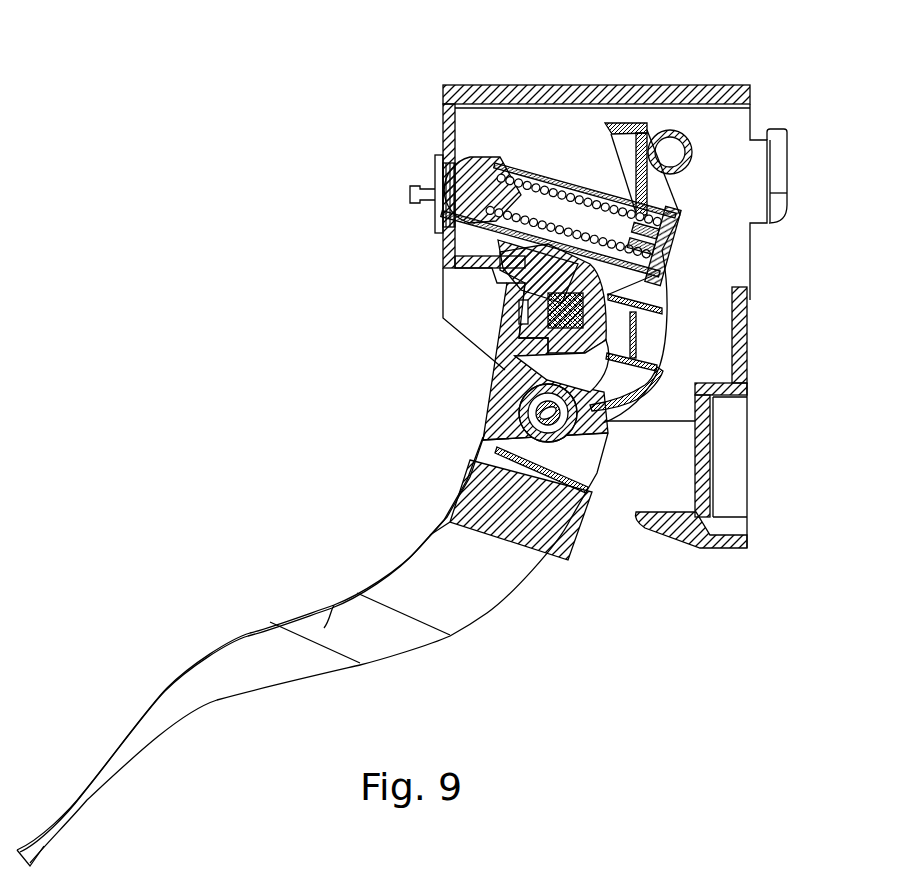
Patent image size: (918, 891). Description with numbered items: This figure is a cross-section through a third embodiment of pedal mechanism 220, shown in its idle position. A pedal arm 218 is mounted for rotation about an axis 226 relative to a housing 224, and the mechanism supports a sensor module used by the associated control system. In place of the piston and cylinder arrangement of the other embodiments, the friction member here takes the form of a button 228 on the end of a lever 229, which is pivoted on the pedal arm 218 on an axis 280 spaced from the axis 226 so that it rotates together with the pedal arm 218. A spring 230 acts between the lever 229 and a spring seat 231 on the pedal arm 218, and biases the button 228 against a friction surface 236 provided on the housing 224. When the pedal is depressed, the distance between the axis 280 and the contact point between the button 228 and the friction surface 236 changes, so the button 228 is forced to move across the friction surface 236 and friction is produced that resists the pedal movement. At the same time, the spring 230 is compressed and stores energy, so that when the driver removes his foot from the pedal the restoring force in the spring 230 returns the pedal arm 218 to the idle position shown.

The pedal arm 218 is at (325, 627).
The pedal mechanism 220 is at (348, 289).
The housing 224 is at (587, 84).
The axis 226 is at (505, 336).
The button 228 is at (477, 164).
The lever 229 is at (645, 352).
The spring 230 is at (556, 193).
The spring seat 231 is at (678, 236).
The friction surface 236 is at (440, 220).
The axis 280 is at (518, 408).